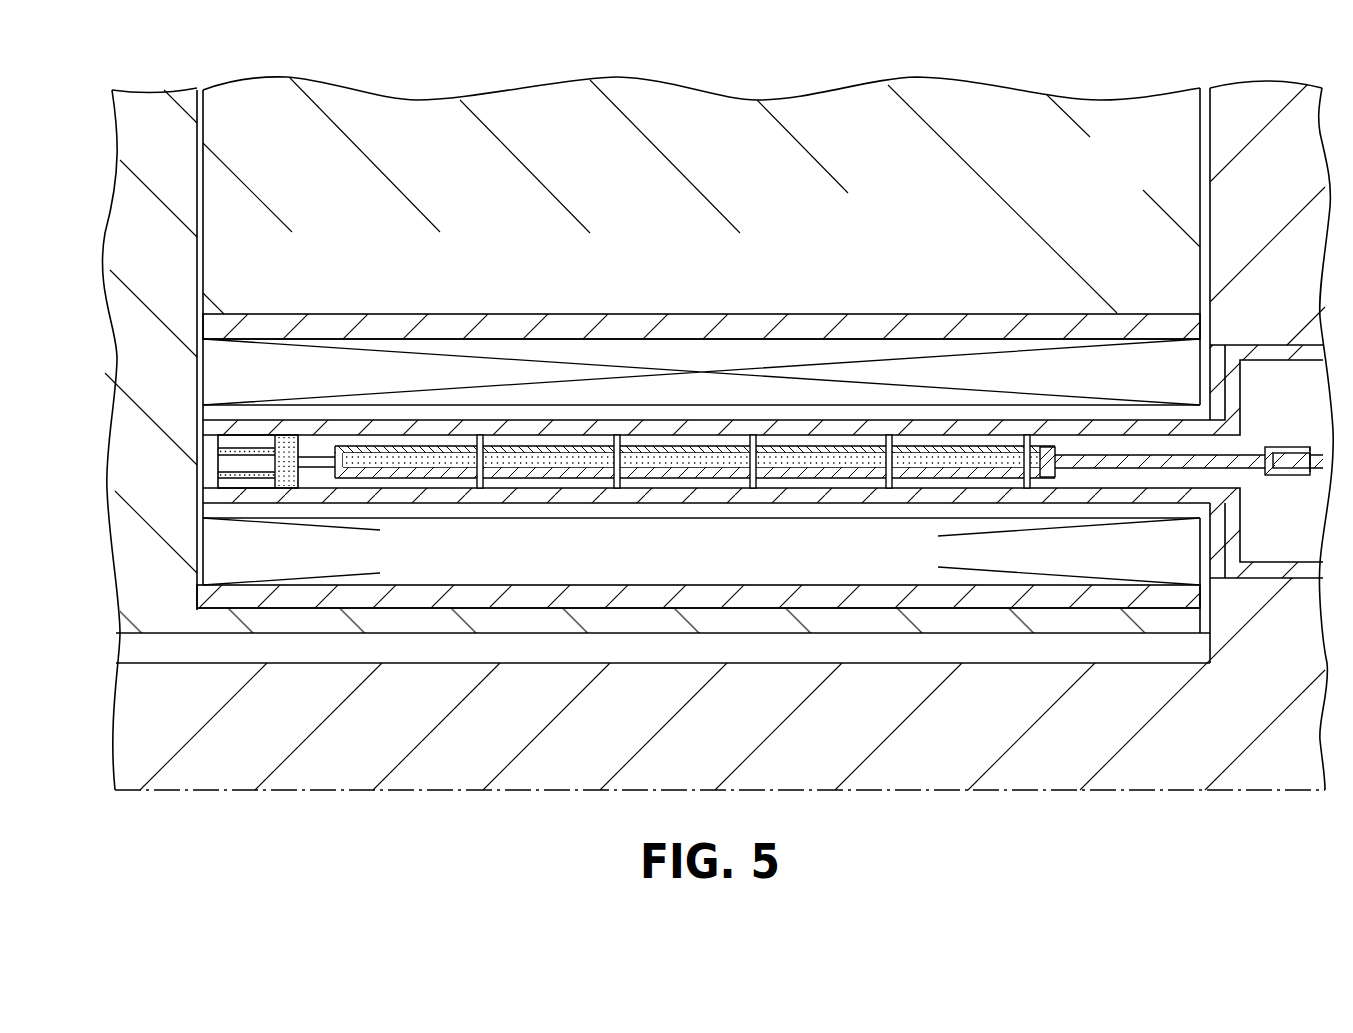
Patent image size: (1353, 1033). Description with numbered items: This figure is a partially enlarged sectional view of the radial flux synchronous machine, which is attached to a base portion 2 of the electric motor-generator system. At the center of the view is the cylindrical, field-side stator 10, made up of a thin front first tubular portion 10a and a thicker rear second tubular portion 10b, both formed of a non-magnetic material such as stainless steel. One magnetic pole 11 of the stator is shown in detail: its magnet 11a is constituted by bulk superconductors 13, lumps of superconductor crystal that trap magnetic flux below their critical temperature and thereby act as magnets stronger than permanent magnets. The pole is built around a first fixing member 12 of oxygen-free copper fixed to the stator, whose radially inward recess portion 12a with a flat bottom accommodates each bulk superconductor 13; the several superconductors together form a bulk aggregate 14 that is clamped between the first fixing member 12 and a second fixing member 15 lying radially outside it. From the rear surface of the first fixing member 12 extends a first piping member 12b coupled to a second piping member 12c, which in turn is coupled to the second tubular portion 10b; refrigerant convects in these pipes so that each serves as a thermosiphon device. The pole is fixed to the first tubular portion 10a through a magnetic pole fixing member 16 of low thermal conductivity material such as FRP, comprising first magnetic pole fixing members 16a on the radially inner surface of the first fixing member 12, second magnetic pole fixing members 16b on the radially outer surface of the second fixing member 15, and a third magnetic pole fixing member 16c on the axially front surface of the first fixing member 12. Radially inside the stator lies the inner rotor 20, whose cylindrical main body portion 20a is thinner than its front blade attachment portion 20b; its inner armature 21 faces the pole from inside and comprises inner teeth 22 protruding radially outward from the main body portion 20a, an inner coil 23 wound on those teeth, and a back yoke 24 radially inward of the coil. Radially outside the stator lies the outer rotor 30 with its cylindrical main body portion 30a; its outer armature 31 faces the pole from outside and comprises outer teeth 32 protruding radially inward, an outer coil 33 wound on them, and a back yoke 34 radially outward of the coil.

The base portion 2 is at (740, 745).
The stator 10 is at (986, 507).
The first tubular portion 10a is at (940, 497).
The second tubular portion 10b is at (1262, 573).
The magnetic pole 11 is at (1062, 448).
The magnet 11a is at (382, 457).
The first fixing member 12 is at (797, 478).
The recess portion 12a is at (733, 452).
The first piping member 12b is at (1232, 467).
The second piping member 12c is at (1318, 457).
The bulk superconductor 13 is at (537, 458).
The bulk aggregate 14 is at (710, 458).
The second fixing member 15 is at (690, 457).
The magnetic pole fixing member 16 is at (890, 461).
The first magnetic pole fixing member 16a is at (482, 488).
The second magnetic pole fixing member 16b is at (613, 437).
The third magnetic pole fixing member 16c is at (287, 447).
The inner rotor 20 is at (552, 637).
The main body portion 20a is at (218, 623).
The blade attachment portion 20b is at (177, 257).
The inner armature 21 is at (405, 717).
The inner teeth 22 is at (358, 557).
The inner coil 23 is at (300, 557).
The back yoke 24 is at (280, 600).
The outer rotor 30 is at (1124, 86).
The main body portion 30a is at (1144, 175).
The outer armature 31 is at (1010, 250).
The outer teeth 32 is at (840, 355).
The outer coil 33 is at (907, 365).
The back yoke 34 is at (985, 330).